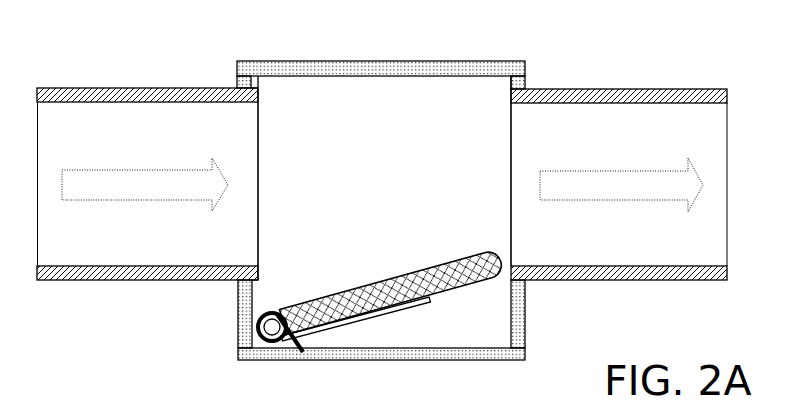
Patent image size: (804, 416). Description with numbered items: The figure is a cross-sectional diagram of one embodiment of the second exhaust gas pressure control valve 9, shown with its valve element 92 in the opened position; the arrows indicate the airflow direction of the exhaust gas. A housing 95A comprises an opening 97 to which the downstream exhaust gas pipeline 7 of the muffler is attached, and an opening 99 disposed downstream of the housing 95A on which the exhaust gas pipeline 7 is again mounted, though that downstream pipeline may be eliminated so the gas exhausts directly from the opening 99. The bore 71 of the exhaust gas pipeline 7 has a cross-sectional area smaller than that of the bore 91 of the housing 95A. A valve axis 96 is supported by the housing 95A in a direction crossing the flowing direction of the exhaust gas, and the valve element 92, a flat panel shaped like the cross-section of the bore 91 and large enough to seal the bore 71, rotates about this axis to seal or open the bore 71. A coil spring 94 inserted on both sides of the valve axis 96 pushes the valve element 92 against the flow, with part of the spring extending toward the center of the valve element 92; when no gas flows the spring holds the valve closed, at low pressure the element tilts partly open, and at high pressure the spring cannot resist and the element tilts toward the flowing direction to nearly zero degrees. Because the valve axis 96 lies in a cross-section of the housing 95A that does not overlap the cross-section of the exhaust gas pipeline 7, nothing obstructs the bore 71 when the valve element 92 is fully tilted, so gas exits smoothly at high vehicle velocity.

The second exhaust gas pressure control valve 9 is at (264, 30).
The exhaust gas pipeline 7 is at (382, 204).
The bore 71 is at (383, 184).
The bore 91 is at (381, 218).
The valve element 92 is at (391, 288).
The coil spring 94 is at (365, 320).
The housing 95A is at (381, 51).
The valve axis 96 is at (294, 296).
The opening 97 is at (212, 202).
The opening 99 is at (552, 202).